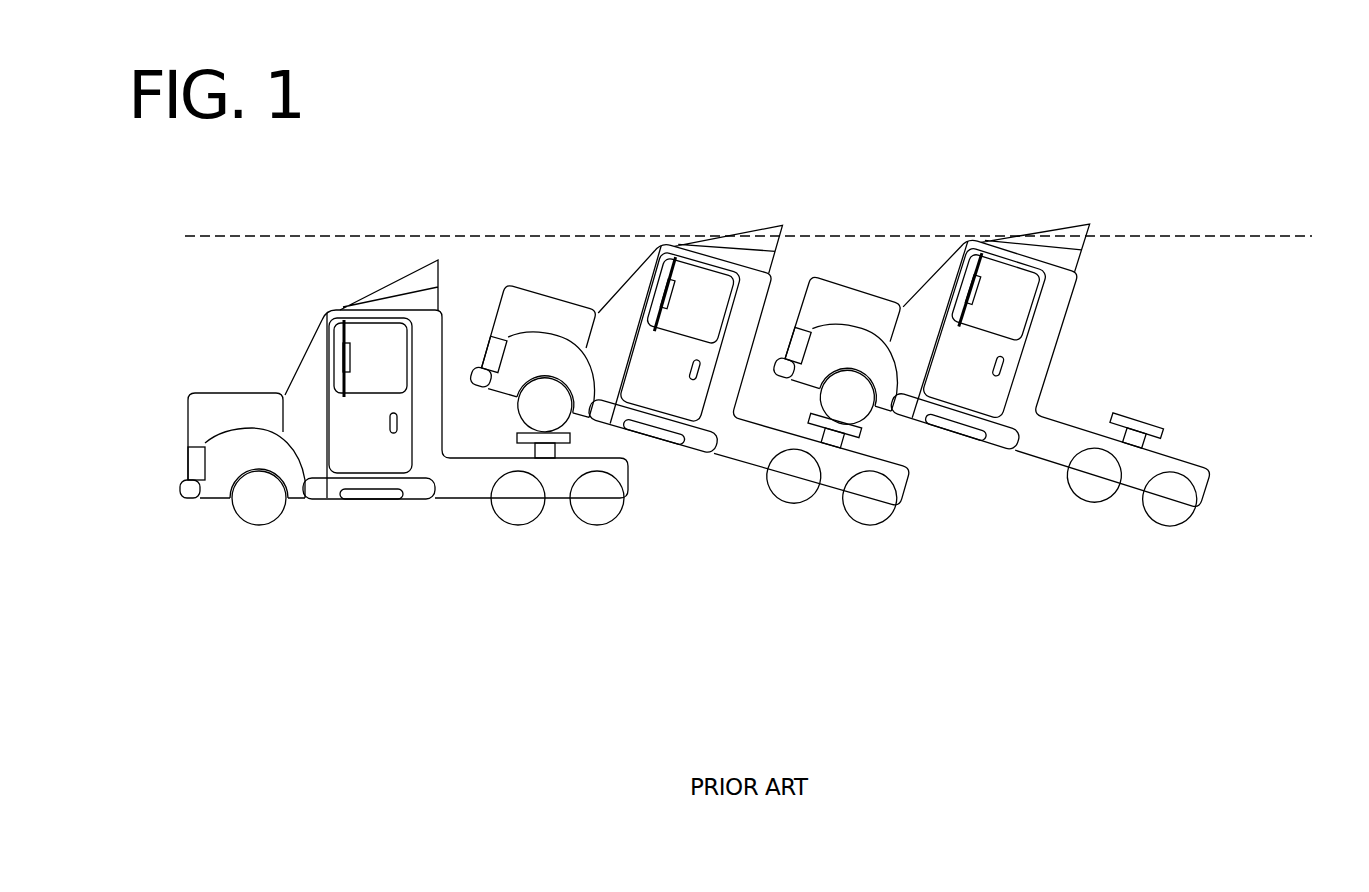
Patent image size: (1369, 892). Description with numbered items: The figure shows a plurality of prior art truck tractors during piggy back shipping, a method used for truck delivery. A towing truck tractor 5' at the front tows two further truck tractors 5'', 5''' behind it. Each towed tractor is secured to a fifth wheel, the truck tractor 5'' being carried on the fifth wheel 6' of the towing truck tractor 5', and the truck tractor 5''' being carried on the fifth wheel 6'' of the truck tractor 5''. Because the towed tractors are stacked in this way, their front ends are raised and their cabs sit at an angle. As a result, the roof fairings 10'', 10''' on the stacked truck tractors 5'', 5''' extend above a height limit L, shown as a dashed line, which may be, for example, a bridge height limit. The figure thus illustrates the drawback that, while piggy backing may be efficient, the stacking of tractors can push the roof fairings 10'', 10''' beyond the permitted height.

The towing truck tractor 5' is at (404, 419).
The truck tractor 5'' is at (706, 383).
The truck tractor 5''' is at (1010, 384).
The fifth wheel 6' is at (554, 510).
The fifth wheel 6'' is at (838, 504).
The roof fairing 10'' is at (769, 221).
The roof fairing 10''' is at (1075, 215).
The height limit L is at (1243, 235).